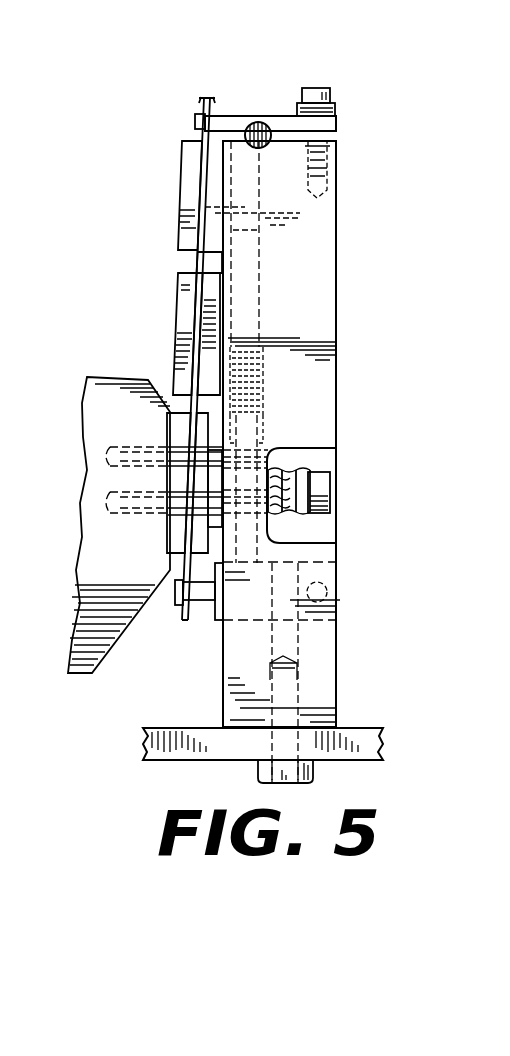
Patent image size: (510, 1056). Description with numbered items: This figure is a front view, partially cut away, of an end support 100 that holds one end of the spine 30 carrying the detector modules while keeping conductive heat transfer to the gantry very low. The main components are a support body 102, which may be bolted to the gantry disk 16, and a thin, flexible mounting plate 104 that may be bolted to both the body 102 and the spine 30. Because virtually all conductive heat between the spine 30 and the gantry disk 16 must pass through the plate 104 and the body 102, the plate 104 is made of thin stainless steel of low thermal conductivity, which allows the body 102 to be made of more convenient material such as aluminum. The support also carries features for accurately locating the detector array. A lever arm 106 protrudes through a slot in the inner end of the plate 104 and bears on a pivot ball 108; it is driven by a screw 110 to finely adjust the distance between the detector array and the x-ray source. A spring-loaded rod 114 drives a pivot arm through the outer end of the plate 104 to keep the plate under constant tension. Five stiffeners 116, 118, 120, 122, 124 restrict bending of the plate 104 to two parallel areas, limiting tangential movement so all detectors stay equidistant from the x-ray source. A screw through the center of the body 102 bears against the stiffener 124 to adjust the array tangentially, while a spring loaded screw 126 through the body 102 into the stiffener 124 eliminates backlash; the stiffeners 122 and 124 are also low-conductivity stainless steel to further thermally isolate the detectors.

The gantry disk 16 is at (355, 727).
The spine 30 is at (127, 627).
The support 100 is at (247, 425).
The support body 102 is at (313, 240).
The mounting plate 104 is at (193, 258).
The lever arm 106 is at (195, 123).
The pivot ball 108 is at (273, 122).
The screw 110 is at (330, 97).
The spring-loaded rod 114 is at (258, 443).
The stiffener 116 is at (182, 170).
The stiffener 118 is at (175, 308).
The stiffener 120 is at (208, 308).
The stiffener 122 is at (170, 426).
The stiffener 124 is at (185, 532).
The spring loaded screw 126 is at (320, 487).